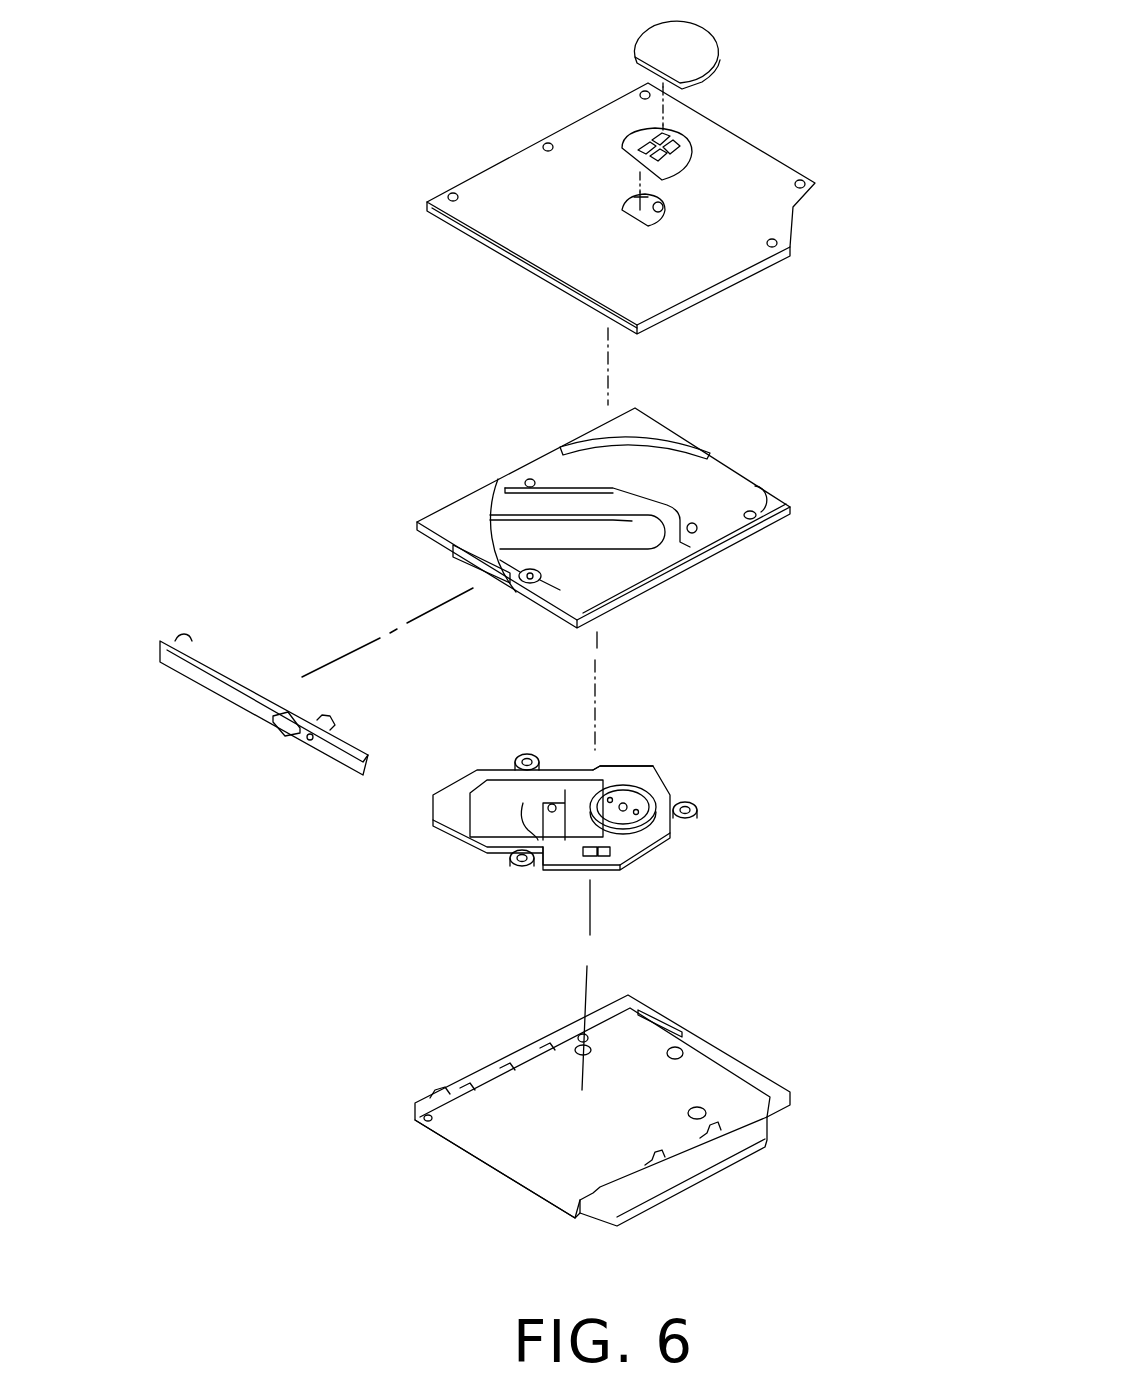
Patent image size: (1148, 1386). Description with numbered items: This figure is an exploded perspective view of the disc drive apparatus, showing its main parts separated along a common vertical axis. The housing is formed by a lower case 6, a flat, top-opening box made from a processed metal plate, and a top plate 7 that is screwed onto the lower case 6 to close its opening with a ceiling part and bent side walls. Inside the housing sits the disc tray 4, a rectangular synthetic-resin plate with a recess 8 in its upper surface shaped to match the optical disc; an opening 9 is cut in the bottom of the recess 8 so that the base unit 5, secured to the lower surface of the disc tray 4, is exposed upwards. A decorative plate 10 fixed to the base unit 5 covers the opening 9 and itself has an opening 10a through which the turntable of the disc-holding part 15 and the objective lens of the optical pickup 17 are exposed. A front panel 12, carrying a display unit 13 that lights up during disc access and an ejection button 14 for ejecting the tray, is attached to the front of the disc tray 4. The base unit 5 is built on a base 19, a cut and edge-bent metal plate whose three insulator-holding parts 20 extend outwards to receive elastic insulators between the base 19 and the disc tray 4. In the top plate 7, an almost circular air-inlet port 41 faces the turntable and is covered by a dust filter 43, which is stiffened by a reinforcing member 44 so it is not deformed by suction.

The disc tray 4 is at (463, 515).
The base unit 5 is at (601, 793).
The lower case 6 is at (715, 1042).
The top plate 7 is at (753, 170).
The recess 8 is at (588, 455).
The opening 9 is at (587, 493).
The decorative plate 10 is at (623, 567).
The opening 10a is at (523, 525).
The front panel 12 is at (264, 735).
The display unit 13 is at (280, 720).
The ejection button 14 is at (293, 736).
The disc-holding part 15 is at (633, 790).
The optical pickup 17 is at (563, 800).
The base 19 is at (613, 770).
The insulator-holding parts 20 is at (525, 756).
The air-inlet port 41 is at (663, 210).
The dust filter 43 is at (713, 33).
The reinforcing member 44 is at (690, 148).